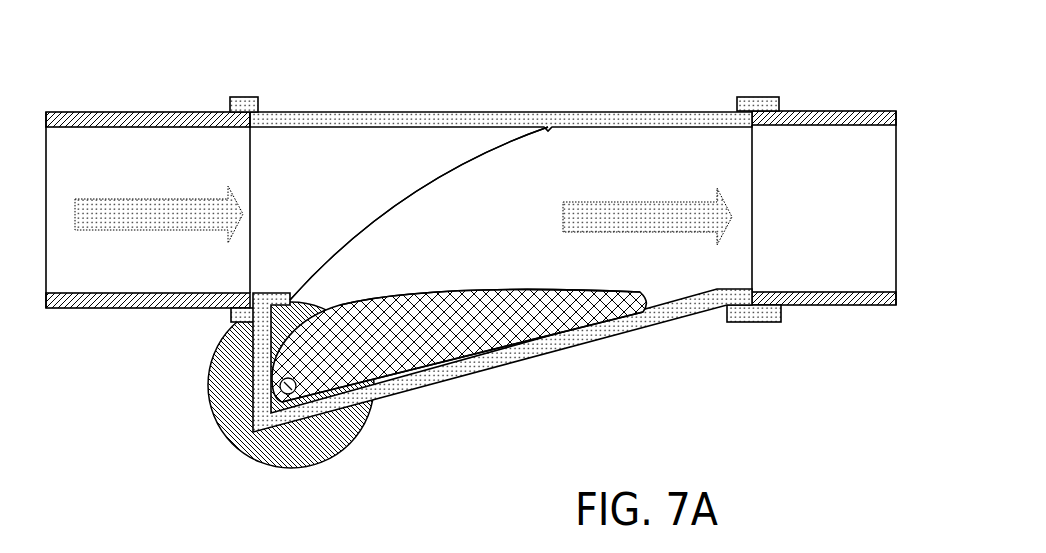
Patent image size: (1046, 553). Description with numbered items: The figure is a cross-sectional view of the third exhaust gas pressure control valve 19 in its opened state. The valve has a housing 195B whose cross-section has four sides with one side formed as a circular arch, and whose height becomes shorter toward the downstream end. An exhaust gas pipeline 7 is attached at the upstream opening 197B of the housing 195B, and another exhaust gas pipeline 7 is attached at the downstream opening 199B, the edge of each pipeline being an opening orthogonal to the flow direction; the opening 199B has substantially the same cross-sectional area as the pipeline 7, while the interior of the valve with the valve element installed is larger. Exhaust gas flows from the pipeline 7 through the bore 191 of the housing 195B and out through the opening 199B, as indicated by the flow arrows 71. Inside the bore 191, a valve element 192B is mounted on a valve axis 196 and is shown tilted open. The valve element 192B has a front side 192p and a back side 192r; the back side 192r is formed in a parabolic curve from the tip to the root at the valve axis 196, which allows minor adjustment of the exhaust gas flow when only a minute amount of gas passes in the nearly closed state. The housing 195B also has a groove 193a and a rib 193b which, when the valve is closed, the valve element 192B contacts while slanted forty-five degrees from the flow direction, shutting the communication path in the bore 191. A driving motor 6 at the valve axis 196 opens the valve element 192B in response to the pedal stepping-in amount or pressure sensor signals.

The third exhaust gas pressure control valve 19 is at (281, 55).
The housing 195B is at (467, 123).
The groove 193a is at (548, 127).
The rib 193b is at (292, 298).
The opening 199B is at (755, 109).
The opening 197B is at (250, 128).
The pipe flow path 71 is at (461, 194).
The bore 191 is at (692, 155).
The valve element 192B is at (500, 297).
The back side 192r is at (537, 292).
The front side 192p is at (470, 343).
The valve axis 196 is at (271, 378).
The exhaust gas pipeline 7 is at (108, 308).
The driving motor 6 is at (226, 430).